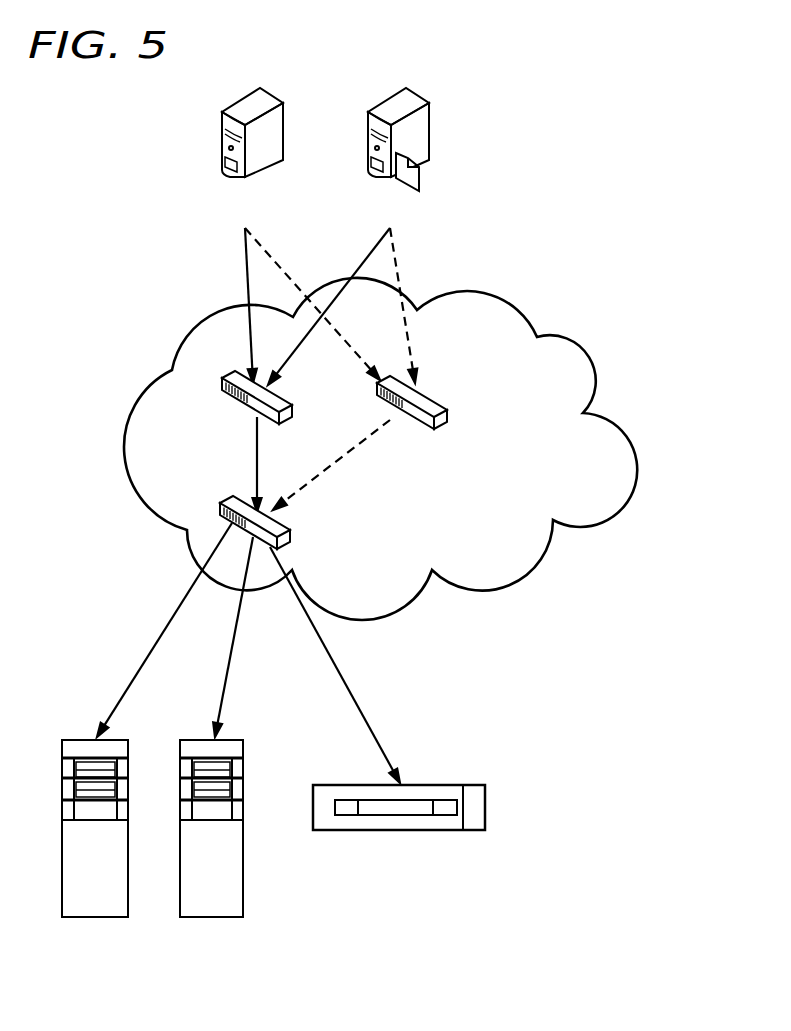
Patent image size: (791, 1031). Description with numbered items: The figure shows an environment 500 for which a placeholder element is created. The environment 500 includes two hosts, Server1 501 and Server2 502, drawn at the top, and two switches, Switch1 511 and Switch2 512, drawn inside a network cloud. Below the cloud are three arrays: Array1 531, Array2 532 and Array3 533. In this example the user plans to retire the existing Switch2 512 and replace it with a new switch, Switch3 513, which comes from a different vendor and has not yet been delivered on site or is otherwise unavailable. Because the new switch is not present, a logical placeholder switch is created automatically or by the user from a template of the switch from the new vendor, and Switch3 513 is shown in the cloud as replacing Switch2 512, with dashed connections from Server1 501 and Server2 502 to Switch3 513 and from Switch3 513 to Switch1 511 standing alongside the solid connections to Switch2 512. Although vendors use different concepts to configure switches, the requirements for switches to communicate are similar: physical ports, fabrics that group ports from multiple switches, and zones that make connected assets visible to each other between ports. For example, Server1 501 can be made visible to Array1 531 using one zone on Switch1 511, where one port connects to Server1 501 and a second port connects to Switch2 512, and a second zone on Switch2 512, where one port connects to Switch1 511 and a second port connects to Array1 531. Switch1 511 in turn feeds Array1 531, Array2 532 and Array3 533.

The environment 500 is at (118, 111).
The Server1 501 is at (277, 95).
The Server2 502 is at (423, 95).
The Switch1 511 is at (222, 502).
The Switch2 512 is at (282, 398).
The Switch3 513 is at (417, 424).
The Array1 531 is at (80, 740).
The Array2 532 is at (230, 740).
The Array3 533 is at (425, 785).